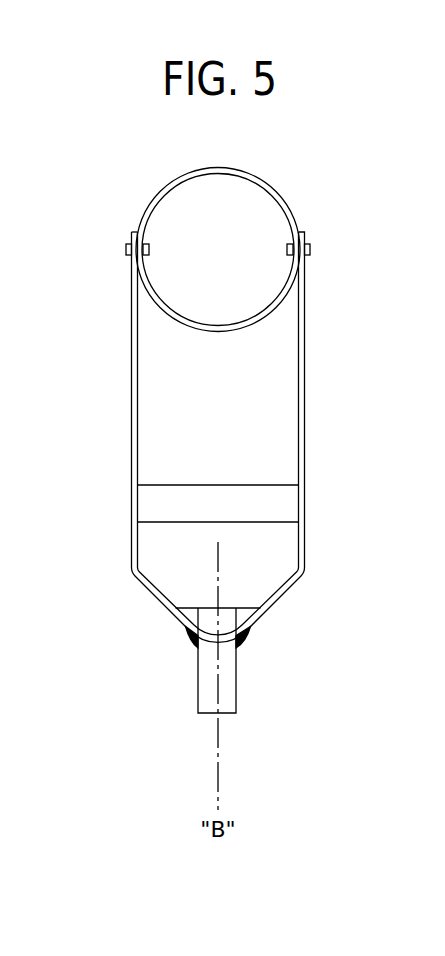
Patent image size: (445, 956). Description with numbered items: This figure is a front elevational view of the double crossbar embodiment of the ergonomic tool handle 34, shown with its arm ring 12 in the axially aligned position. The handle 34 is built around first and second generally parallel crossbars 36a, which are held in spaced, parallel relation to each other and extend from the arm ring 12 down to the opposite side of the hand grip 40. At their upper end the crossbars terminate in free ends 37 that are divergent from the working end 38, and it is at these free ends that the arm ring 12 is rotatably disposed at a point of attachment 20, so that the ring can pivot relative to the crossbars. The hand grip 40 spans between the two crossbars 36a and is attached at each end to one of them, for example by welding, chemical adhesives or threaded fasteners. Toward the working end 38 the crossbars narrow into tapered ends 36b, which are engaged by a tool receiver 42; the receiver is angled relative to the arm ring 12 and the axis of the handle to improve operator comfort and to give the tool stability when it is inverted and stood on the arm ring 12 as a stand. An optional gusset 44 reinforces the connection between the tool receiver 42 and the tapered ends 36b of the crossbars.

The double crossbar ergonomic tool handle 34 is at (139, 160).
The arm ring 12 is at (240, 177).
The free ends 37 is at (132, 236).
The point of attachment 20 is at (298, 237).
The generally parallel crossbars 36a is at (132, 400).
The tapered ends 36b is at (297, 582).
The hand grip 40 is at (163, 507).
The gusset 44 is at (243, 612).
The working end 38 is at (188, 627).
The tool receiver 42 is at (227, 692).